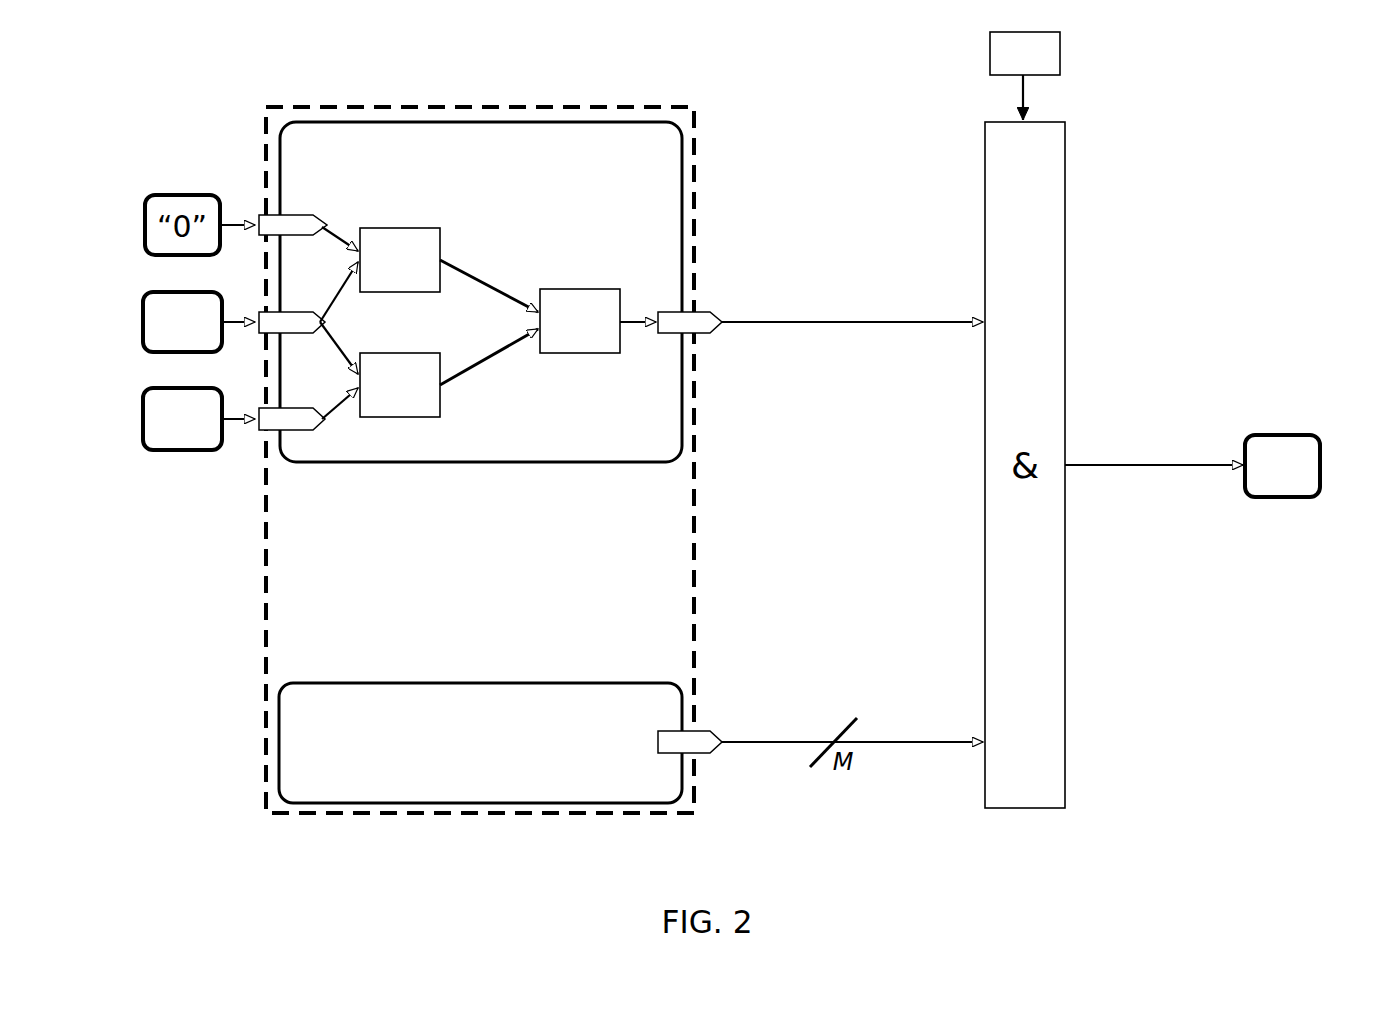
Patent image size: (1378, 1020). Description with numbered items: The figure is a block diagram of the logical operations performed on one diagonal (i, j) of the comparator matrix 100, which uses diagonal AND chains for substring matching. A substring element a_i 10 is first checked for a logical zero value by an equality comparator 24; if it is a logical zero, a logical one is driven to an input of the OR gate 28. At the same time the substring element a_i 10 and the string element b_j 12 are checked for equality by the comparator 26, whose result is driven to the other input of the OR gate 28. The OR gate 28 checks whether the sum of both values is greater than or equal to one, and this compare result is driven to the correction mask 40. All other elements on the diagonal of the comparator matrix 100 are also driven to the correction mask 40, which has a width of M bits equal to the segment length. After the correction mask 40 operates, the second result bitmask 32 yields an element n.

The comparator matrix 100 is at (490, 413).
The substring element a_i 10 is at (134, 322).
The string element b_j 12 is at (134, 418).
The equality comparator 24 is at (440, 235).
The comparator 26 is at (440, 402).
The OR gate 28 is at (565, 289).
The correction mask 40 is at (990, 53).
The second result bitmask 32 is at (1287, 423).